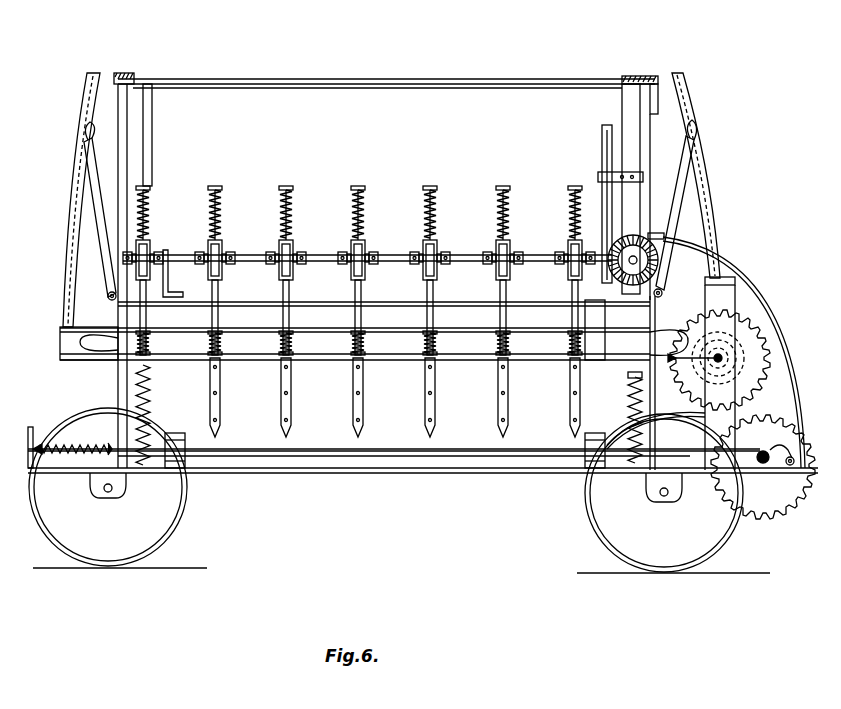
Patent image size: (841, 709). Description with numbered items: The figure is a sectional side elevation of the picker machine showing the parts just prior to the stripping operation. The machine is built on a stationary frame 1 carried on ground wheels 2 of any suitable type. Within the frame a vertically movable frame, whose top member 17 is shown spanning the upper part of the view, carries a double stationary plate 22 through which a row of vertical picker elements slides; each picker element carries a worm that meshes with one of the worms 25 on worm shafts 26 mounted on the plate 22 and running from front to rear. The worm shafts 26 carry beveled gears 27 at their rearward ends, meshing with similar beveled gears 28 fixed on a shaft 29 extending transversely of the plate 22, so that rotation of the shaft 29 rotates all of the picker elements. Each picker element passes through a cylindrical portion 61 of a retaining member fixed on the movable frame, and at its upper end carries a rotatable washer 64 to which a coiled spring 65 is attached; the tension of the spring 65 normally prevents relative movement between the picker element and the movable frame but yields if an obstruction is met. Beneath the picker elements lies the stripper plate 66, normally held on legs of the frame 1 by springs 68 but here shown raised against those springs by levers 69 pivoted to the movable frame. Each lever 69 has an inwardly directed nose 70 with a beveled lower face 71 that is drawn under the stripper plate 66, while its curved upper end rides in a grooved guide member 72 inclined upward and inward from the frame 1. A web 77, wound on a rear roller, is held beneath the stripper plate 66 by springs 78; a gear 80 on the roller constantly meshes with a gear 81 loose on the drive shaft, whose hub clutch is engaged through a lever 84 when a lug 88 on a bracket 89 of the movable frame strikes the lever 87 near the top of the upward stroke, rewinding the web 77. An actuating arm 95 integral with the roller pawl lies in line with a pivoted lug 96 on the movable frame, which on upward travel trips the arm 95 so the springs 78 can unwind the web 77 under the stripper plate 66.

The stationary frame 1 is at (745, 284).
The ground wheels 2 is at (187, 513).
The top rail 17 is at (358, 79).
The stationary plate 22 is at (316, 318).
The worms 25 is at (272, 268).
The worm shafts 26 is at (250, 255).
The beveled gears 27 is at (296, 336).
The beveled gears 28 is at (633, 234).
The shaft 29 is at (221, 401).
The cylindrical portion 61 is at (180, 432).
The washer 64 is at (284, 186).
The coiled spring 65 is at (222, 222).
The stripper plate 66 is at (336, 362).
The springs 68 is at (628, 390).
The levers 69 is at (82, 200).
The nose 70 is at (654, 372).
The beveled lower face 71 is at (630, 400).
The grooved guide member 72 is at (84, 96).
The web 77 is at (389, 449).
The springs 78 is at (64, 440).
The gear 80 is at (782, 504).
The gear 81 is at (760, 342).
The lever 84 is at (768, 356).
The lever 87 is at (602, 126).
The lug 88 is at (598, 176).
The bracket 89 is at (604, 158).
The actuating arm 95 is at (762, 300).
The lug 96 is at (650, 233).